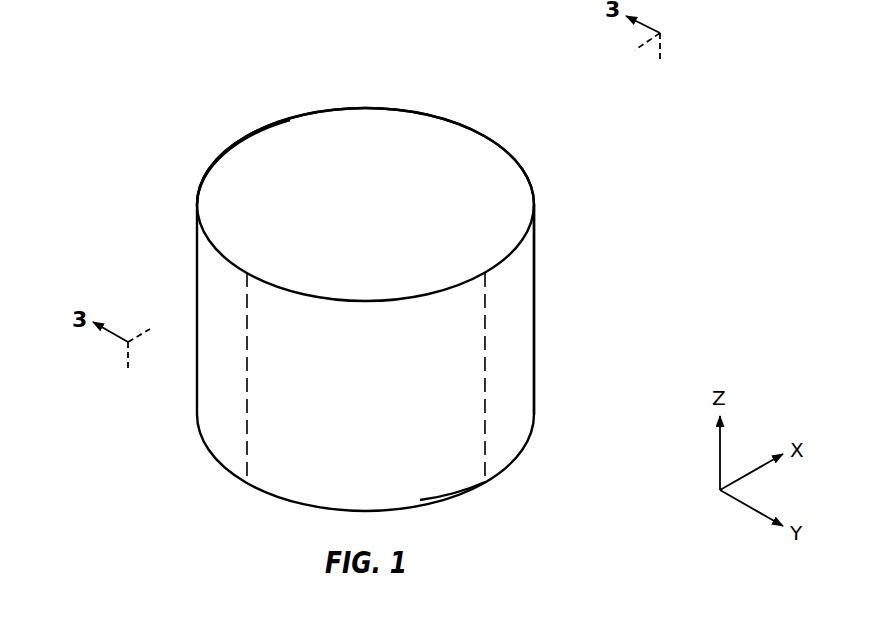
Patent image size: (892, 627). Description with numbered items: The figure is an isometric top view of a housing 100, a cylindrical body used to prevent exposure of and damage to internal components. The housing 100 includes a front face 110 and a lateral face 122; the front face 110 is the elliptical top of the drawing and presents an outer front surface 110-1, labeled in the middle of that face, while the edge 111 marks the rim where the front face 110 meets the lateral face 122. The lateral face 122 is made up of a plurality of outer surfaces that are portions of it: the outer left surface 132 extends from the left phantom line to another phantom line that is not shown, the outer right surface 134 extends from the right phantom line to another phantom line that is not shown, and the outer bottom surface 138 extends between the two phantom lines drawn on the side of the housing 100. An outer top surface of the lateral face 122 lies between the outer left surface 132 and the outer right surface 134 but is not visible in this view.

The housing 100 is at (525, 105).
The front face 110 is at (511, 181).
The outer front surface 110-1 is at (391, 217).
The top edge 111 is at (250, 130).
The lateral face 122 is at (422, 425).
The outer left surface 132 is at (222, 343).
The outer right surface 134 is at (534, 288).
The outer bottom surface 138 is at (458, 387).